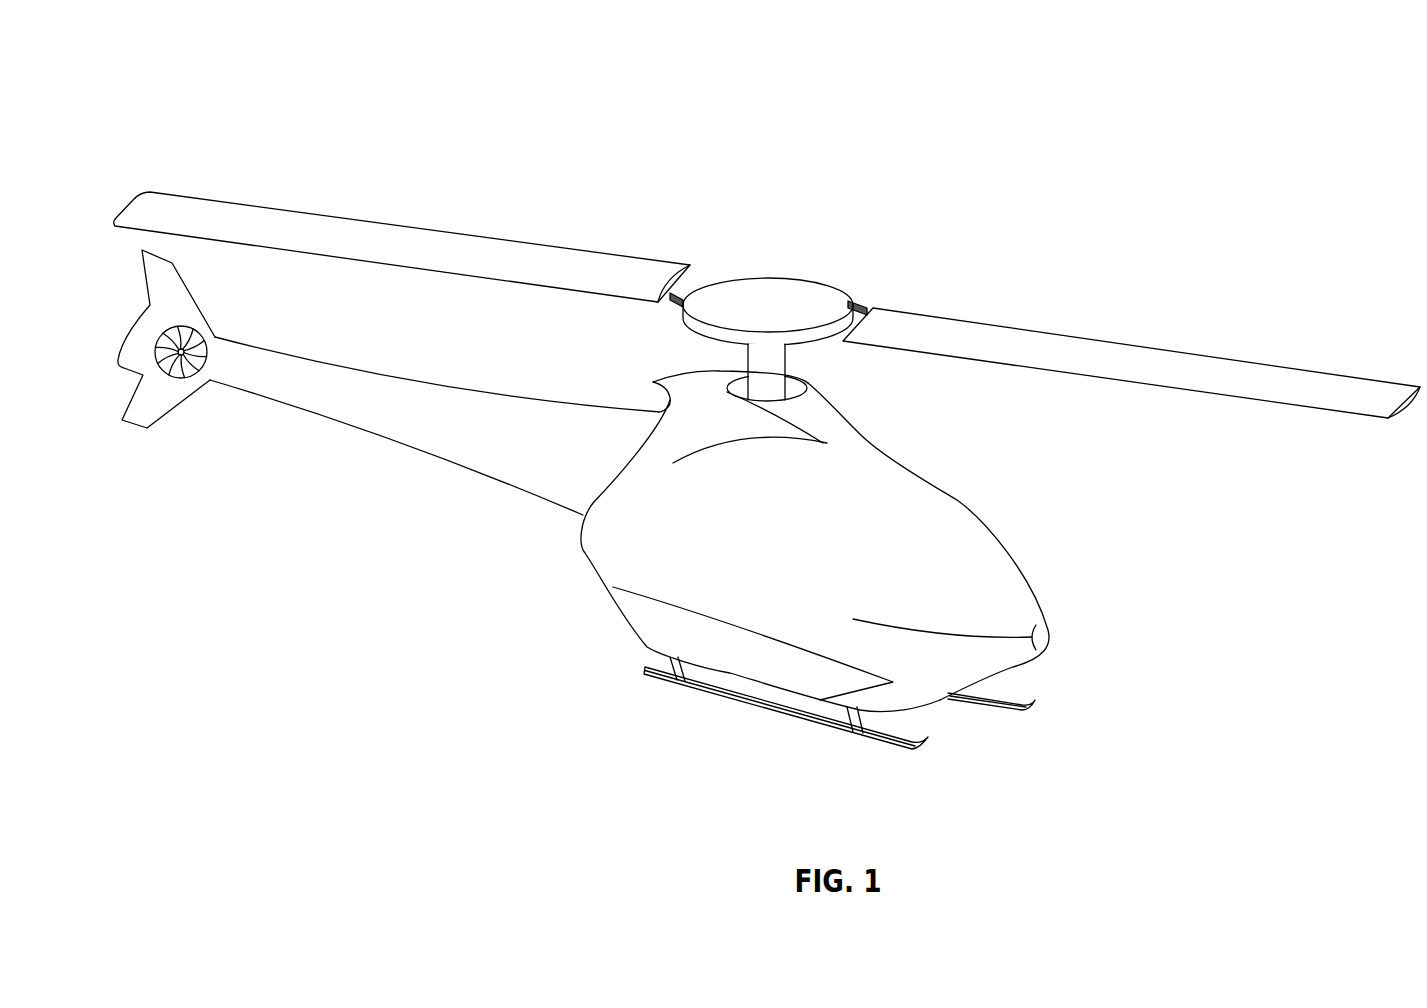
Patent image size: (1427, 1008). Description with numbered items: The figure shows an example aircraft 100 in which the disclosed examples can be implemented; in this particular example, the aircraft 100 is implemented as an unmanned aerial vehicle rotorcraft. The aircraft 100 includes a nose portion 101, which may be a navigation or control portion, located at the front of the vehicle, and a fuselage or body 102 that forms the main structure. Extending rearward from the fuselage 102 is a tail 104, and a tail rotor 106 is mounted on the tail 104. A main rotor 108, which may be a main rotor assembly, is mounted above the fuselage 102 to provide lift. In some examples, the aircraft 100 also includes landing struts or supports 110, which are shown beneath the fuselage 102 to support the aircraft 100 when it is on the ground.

The aircraft 100 is at (1185, 72).
The nose portion 101 is at (1020, 602).
The fuselage 102 is at (687, 553).
The tail 104 is at (195, 377).
The tail rotor 106 is at (162, 273).
The main rotor 108 is at (540, 243).
The landing struts 110 is at (750, 703).